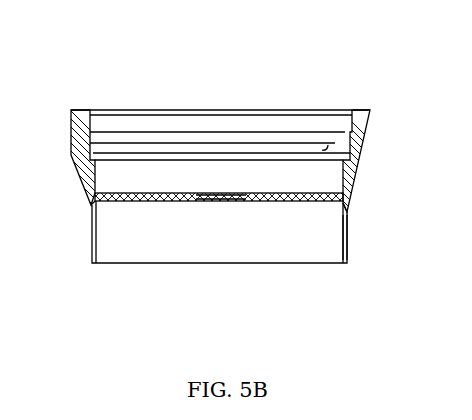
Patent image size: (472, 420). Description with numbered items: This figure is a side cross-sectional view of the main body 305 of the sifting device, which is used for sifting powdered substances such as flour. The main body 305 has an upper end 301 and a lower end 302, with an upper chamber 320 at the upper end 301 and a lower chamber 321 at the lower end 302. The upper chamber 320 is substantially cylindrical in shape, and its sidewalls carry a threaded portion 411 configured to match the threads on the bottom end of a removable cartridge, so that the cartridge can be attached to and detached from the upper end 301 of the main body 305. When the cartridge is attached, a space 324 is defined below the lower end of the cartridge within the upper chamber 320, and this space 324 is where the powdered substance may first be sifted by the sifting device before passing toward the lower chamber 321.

The main body 305 is at (63, 87).
The upper end 301 is at (372, 106).
The threaded portion 411 is at (367, 145).
The upper chamber 320 is at (222, 158).
The space 324 is at (340, 178).
The lower end 302 is at (84, 266).
The lower chamber 321 is at (338, 242).